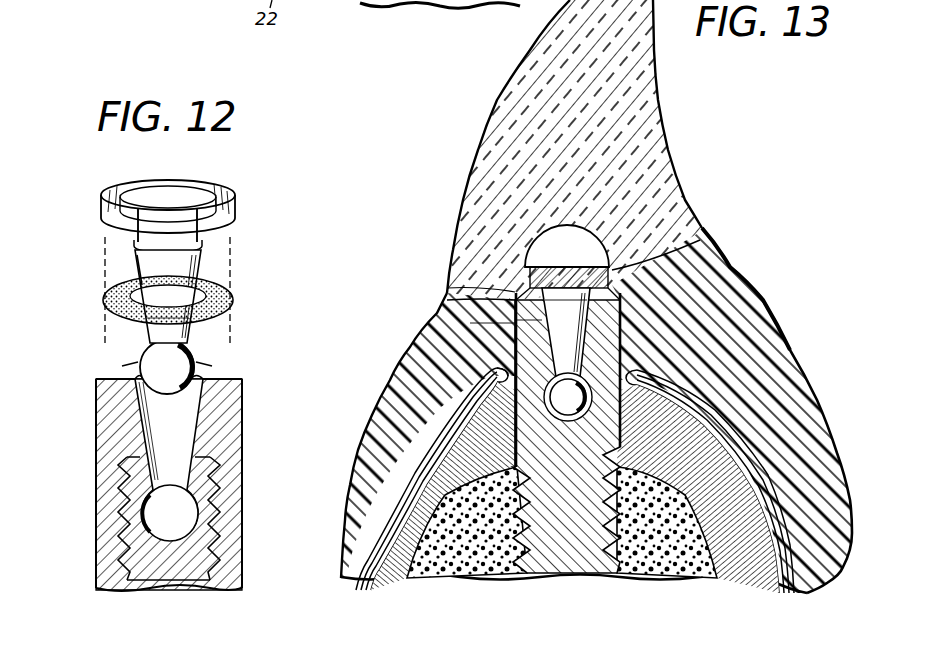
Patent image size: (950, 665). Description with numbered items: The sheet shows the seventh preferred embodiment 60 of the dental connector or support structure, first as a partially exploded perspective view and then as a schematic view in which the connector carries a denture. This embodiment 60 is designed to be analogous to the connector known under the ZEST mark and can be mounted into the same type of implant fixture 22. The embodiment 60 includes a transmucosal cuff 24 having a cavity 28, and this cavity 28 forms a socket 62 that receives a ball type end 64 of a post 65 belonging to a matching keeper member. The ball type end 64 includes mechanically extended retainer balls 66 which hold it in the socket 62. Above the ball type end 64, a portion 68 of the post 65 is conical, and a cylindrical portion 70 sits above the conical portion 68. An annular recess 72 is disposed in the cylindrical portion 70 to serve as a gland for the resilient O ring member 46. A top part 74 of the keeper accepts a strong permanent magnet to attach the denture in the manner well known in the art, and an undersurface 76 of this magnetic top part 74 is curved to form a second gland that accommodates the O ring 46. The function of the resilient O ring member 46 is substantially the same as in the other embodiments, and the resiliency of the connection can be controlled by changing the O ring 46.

In FIG. 12, the implant fixture 22 is at (105, 480).
In FIG. 13, the implant fixture 22 is at (625, 360).
In FIG. 12, the transmucosal cuff 24 is at (240, 424).
In FIG. 13, the transmucosal cuff 24 is at (625, 330).
In FIG. 12, the cavity 28 is at (140, 433).
In FIG. 12, the resilient O ring member 46 is at (235, 300).
In FIG. 13, the resilient O ring member 46 is at (700, 247).
In FIG. 12, the dental connector embodiment 60 is at (100, 296).
In FIG. 13, the dental connector embodiment 60 is at (507, 323).
In FIG. 12, the socket 62 is at (140, 520).
In FIG. 13, the socket 62 is at (505, 377).
In FIG. 12, the ball type end 64 is at (140, 395).
In FIG. 13, the ball type end 64 is at (517, 413).
In FIG. 12, the post 65 is at (145, 270).
In FIG. 13, the post 65 is at (447, 288).
In FIG. 12, the retainer balls 66 is at (143, 360).
In FIG. 13, the retainer balls 66 is at (480, 370).
In FIG. 12, the conical portion 68 is at (160, 318).
In FIG. 13, the conical portion 68 is at (513, 320).
In FIG. 12, the cylindrical portion 70 is at (198, 256).
In FIG. 13, the cylindrical portion 70 is at (562, 313).
In FIG. 12, the annular recess 72 is at (228, 225).
In FIG. 13, the annular recess 72 is at (580, 266).
In FIG. 12, the top part 74 is at (175, 213).
In FIG. 13, the top part 74 is at (568, 262).
In FIG. 13, the undersurface 76 is at (525, 278).